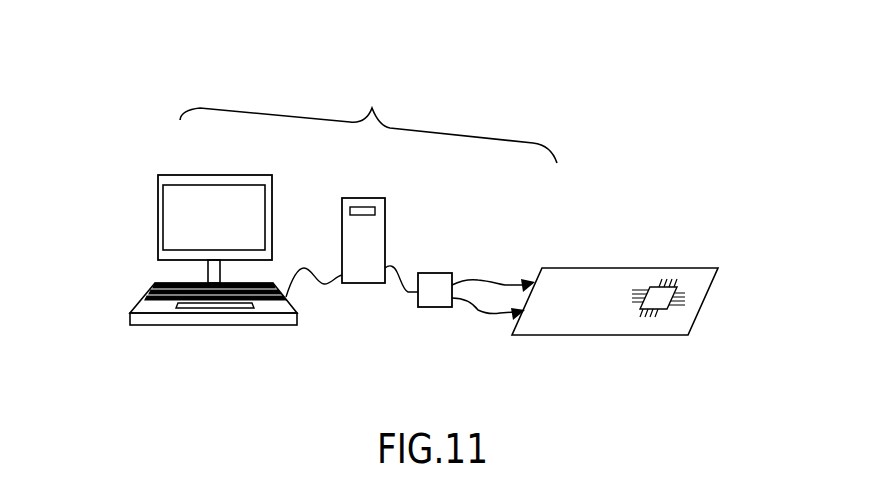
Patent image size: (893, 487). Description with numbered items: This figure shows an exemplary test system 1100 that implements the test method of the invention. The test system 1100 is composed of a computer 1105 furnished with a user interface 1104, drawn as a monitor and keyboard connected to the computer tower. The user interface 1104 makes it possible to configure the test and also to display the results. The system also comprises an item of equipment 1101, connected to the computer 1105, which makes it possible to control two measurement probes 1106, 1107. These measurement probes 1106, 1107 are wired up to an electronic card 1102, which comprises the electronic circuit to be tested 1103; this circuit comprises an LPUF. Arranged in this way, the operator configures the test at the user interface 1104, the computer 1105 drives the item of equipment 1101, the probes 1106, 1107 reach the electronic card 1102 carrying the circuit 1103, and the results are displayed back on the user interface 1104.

The test system 1100 is at (382, 96).
The item of equipment 1101 is at (430, 273).
The electronic card 1102 is at (640, 268).
The electronic circuit to be tested 1103 is at (660, 302).
The user interface 1104 is at (158, 230).
The computer 1105 is at (375, 283).
The measurement probe 1106 is at (478, 310).
The measurement probe 1107 is at (487, 281).